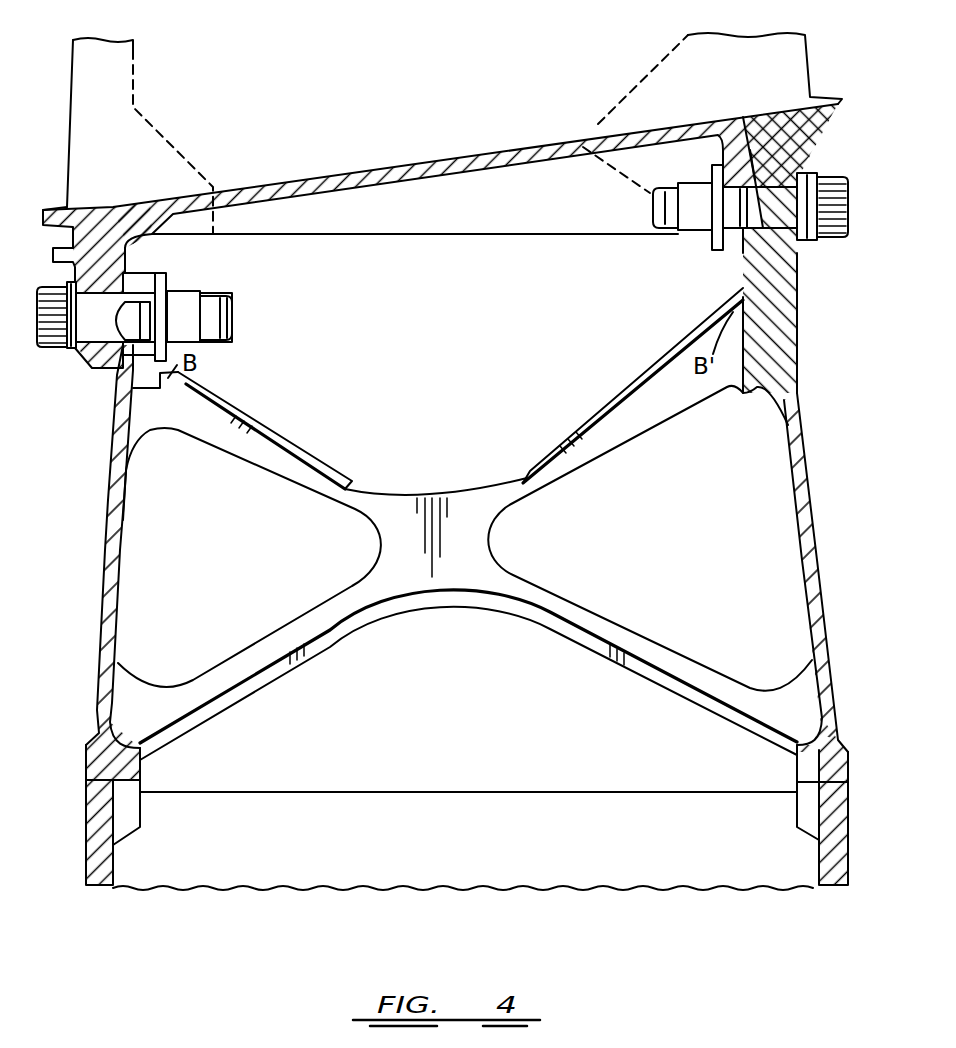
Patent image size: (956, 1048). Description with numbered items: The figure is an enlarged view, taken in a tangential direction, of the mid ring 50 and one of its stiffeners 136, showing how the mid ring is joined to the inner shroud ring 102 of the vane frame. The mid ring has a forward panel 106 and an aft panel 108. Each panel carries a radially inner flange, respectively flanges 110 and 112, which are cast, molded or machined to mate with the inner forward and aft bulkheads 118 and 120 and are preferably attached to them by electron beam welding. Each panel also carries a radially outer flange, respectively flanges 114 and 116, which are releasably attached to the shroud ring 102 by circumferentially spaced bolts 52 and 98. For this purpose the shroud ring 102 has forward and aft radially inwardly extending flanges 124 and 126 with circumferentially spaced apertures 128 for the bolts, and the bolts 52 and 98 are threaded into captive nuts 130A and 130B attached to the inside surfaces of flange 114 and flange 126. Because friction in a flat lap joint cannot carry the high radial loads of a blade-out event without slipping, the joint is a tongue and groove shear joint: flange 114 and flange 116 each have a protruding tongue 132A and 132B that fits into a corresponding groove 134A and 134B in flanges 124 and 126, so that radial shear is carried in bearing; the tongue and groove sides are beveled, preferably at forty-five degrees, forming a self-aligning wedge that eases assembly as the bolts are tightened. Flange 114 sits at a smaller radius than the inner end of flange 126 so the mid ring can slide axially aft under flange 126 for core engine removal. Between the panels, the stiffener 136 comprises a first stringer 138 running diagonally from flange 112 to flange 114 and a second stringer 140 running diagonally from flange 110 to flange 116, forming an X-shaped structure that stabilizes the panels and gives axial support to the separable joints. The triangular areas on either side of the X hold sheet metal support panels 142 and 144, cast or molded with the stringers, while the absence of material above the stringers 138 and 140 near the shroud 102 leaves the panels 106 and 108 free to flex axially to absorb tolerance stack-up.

The mid ring 50 is at (96, 557).
The bolt 52 is at (667, 229).
The bolt 98 is at (220, 317).
The inner shroud ring 102 is at (320, 172).
The forward panel 106 is at (117, 580).
The aft panel 108 is at (805, 545).
The radially inner flange 110 is at (98, 757).
The radially inner flange 112 is at (833, 762).
The radially outer flange 114 is at (114, 418).
The radially outer flange 116 is at (770, 320).
The inner forward bulkhead 118 is at (95, 857).
The inner aft bulkhead 120 is at (832, 850).
The forward radially inwardly extending flange 124 is at (108, 256).
The aft radially inwardly extending flange 126 is at (773, 147).
The aperture 128 is at (83, 352).
The captive nut 130A is at (168, 280).
The captive nut 130B is at (637, 162).
The tongue 132A is at (127, 323).
The tongue 132B is at (770, 212).
The groove 134A is at (135, 266).
The groove 134B is at (737, 288).
The stiffener 136 is at (452, 527).
The first stringer 138 is at (278, 460).
The second stringer 140 is at (230, 675).
The support panel 142 is at (273, 568).
The support panel 144 is at (685, 529).